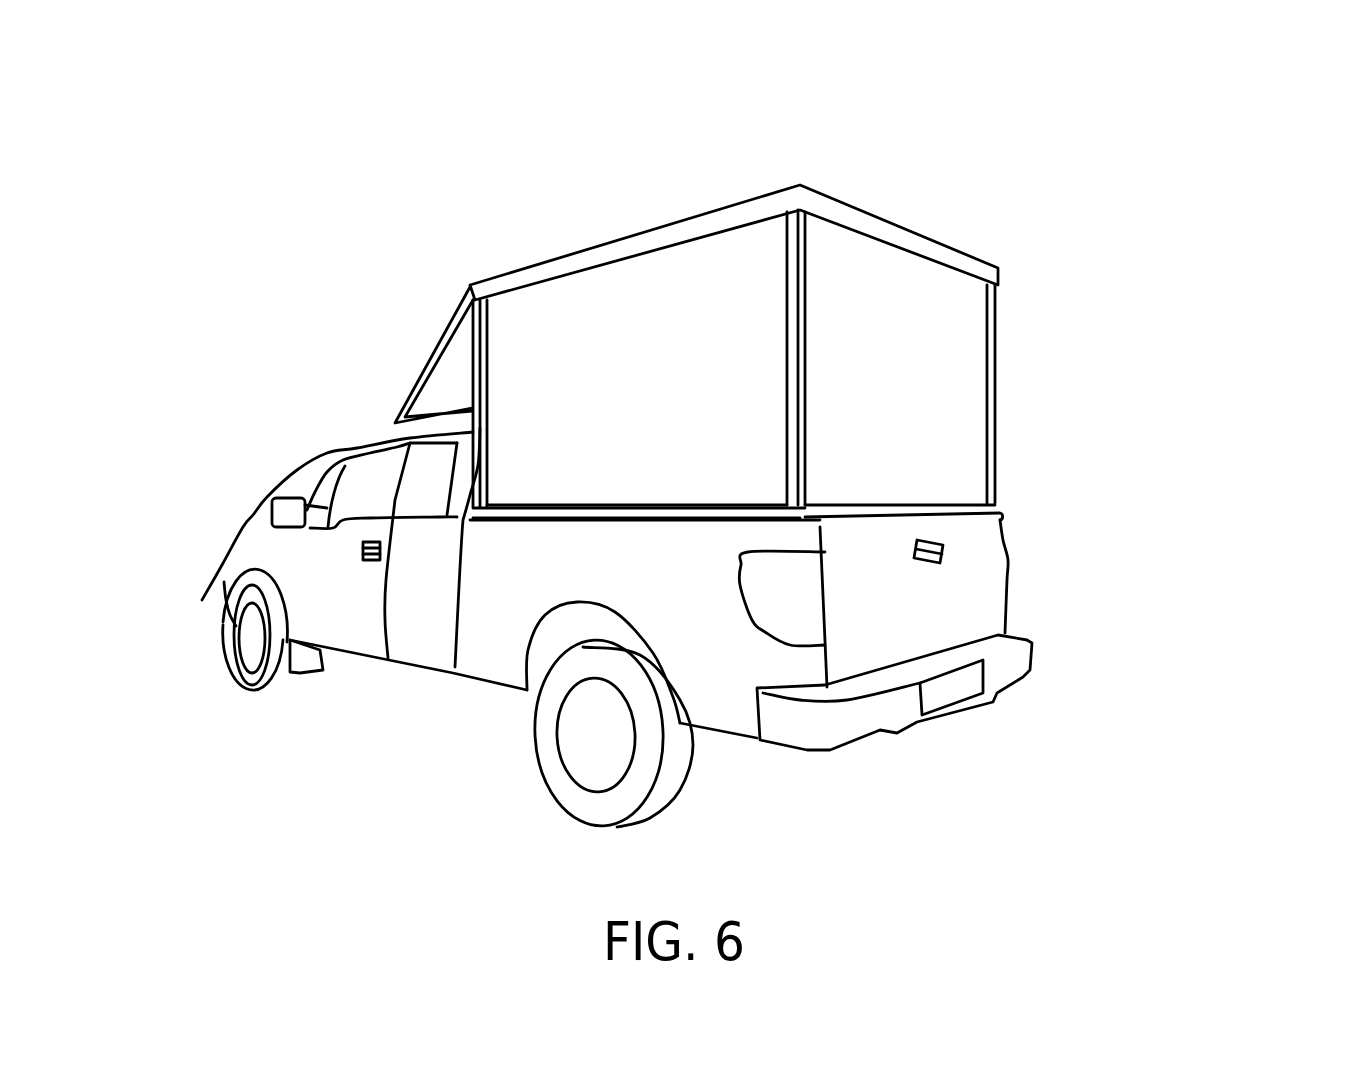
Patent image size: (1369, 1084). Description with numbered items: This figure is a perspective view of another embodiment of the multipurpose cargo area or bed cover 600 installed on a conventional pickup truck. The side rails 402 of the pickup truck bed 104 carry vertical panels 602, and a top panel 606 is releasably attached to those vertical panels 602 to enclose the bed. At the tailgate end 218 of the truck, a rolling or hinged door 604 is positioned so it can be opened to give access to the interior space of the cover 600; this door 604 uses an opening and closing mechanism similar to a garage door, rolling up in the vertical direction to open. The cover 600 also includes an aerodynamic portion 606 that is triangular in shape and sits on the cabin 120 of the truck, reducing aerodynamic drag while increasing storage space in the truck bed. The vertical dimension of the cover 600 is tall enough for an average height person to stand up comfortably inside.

The cover 600 is at (676, 470).
The top panel 606 is at (633, 234).
The rolling or hinged door 604 is at (893, 412).
The vertical panels 602 is at (557, 493).
The pickup truck bed 104 is at (917, 598).
The tailgate end 218 is at (963, 598).
The side rails 402 is at (645, 522).
The cabin 120 is at (224, 582).